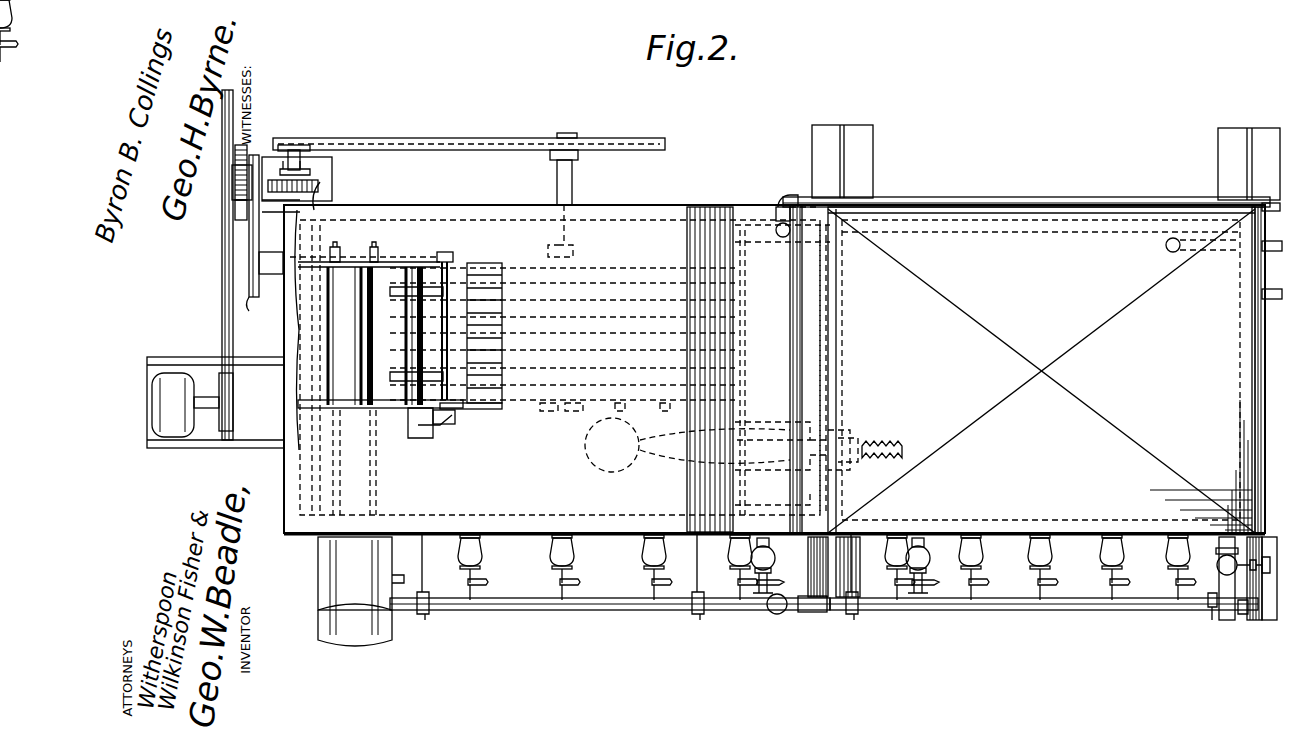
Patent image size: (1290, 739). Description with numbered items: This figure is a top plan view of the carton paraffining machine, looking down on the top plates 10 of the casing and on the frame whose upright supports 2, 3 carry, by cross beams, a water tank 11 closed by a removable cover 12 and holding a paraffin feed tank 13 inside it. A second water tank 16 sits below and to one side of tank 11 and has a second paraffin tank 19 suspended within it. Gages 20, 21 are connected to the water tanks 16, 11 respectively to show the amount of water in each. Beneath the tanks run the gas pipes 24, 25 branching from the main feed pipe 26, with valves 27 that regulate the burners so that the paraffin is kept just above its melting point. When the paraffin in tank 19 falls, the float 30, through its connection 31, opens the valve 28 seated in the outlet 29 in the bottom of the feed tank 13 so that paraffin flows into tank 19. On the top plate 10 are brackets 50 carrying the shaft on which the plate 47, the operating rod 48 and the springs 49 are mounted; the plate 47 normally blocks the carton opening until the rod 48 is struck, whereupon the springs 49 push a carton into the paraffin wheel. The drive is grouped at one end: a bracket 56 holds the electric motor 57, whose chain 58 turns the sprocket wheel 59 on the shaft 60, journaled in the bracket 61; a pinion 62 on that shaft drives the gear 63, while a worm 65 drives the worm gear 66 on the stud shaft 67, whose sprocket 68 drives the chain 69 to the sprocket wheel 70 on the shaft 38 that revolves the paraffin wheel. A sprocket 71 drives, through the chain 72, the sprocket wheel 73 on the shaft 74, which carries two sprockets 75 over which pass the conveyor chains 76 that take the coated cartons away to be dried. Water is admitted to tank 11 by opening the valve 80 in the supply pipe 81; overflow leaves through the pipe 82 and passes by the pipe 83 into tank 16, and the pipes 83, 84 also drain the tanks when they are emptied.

The upright support 2 is at (860, 162).
The upright support 3 is at (1235, 158).
The top plate 10 is at (612, 228).
The water tank 11 is at (1116, 220).
The removable cover 12 is at (1046, 370).
The paraffin feed tank 13 is at (1058, 230).
The second water tank 16 is at (755, 212).
The second paraffin tank 19 is at (770, 245).
The gage 20 is at (760, 560).
The gage 21 is at (930, 570).
The gas pipe 24 is at (632, 608).
The gas pipe 25 is at (1027, 608).
The main feed pipe 26 is at (780, 612).
The valves 27 is at (560, 582).
The valve 28 is at (850, 440).
The outlet 29 is at (875, 448).
The float 30 is at (600, 468).
The connection 31 is at (750, 472).
The shaft 38 is at (573, 192).
The plate 47 is at (460, 290).
The operating rod 48 is at (480, 410).
The spring 49 is at (400, 288).
The brackets 50 is at (440, 258).
The bracket 56 is at (250, 372).
The electric motor 57 is at (162, 392).
The chain 58 is at (219, 320).
The sprocket wheel 59 is at (222, 262).
The shaft 60 is at (286, 208).
The bracket 61 is at (332, 182).
The pinion 62 is at (246, 208).
The gear 63 is at (286, 224).
The worm 65 is at (315, 172).
The worm gear 66 is at (318, 196).
The stud shaft 67 is at (294, 150).
The sprocket 68 is at (305, 145).
The chain 69 is at (405, 136).
The sprocket wheel 70 is at (585, 139).
The sprocket 71 is at (248, 150).
The chain 72 is at (262, 240).
The sprocket wheel 73 is at (255, 307).
The shaft 74 is at (271, 276).
The sprockets 75 is at (360, 255).
The chains 76 is at (364, 640).
The valve 80 is at (1218, 572).
The supply pipe 81 is at (1235, 612).
The pipe 82 is at (1262, 296).
The pipe 83 is at (1040, 196).
The pipe 84 is at (1260, 250).